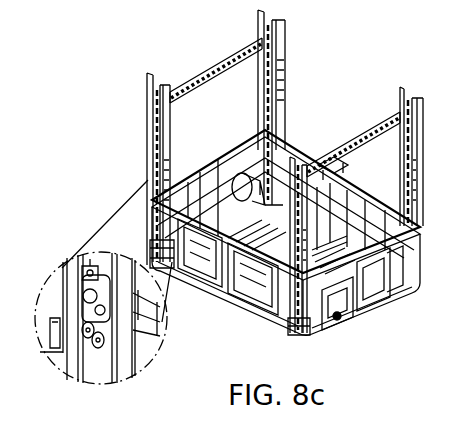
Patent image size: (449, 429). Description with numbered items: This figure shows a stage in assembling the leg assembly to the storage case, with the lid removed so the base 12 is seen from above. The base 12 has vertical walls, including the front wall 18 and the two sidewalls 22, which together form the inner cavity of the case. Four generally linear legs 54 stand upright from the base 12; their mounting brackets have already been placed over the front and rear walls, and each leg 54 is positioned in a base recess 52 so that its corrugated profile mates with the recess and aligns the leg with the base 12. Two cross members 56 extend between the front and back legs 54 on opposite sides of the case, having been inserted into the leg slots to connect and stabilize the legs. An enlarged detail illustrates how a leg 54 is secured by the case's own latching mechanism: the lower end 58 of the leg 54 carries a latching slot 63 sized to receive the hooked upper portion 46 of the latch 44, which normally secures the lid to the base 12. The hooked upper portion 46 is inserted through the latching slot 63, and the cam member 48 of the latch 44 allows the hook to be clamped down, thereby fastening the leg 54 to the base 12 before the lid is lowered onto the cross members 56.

The base 12 is at (221, 280).
The front wall 18 is at (229, 288).
The sidewalls 22 is at (402, 290).
The latch 44 is at (90, 350).
The hooked upper portion 46 is at (86, 300).
The cam member 48 is at (148, 343).
The base recess 52 is at (153, 243).
The legs 54 is at (259, 84).
The cross members 56 is at (212, 66).
The lower end 58 is at (52, 333).
The latching slot 63 is at (83, 276).